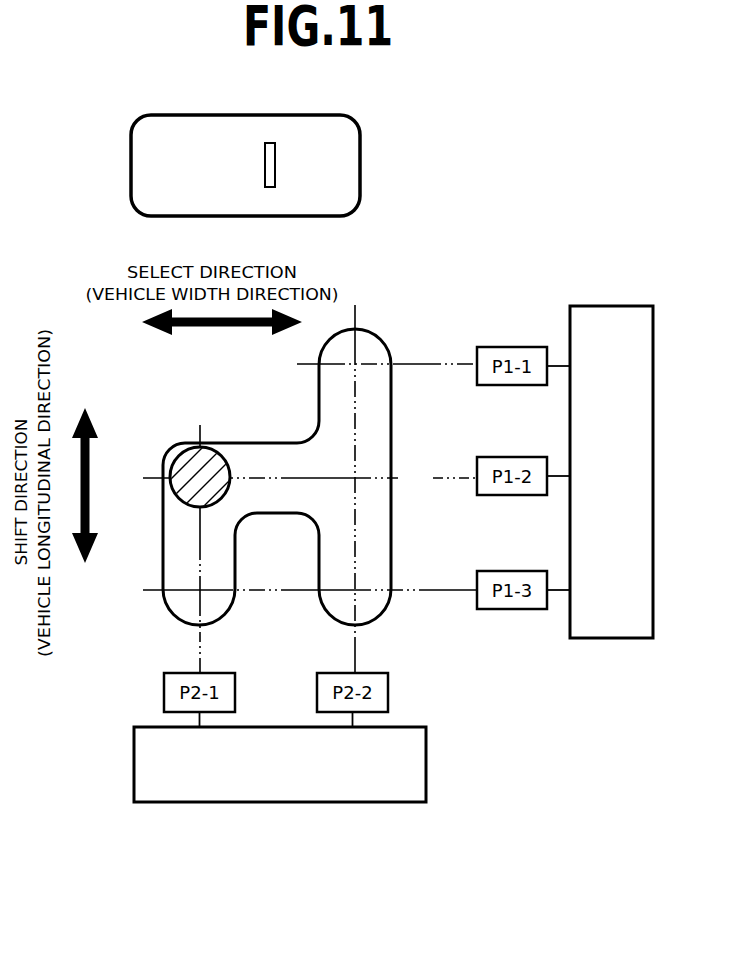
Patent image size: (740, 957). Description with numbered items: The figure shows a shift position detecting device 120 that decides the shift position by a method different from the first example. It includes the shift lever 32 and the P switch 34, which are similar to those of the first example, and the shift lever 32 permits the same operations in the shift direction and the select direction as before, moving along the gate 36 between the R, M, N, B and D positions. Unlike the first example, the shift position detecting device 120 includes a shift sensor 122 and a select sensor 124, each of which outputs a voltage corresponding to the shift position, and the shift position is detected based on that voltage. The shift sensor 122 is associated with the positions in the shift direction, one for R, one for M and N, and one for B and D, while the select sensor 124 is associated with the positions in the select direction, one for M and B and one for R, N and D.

The shift position detecting device 120 is at (518, 82).
The P switch 34 is at (148, 181).
The shift gate 36 is at (390, 456).
The shift lever 32 is at (212, 446).
The shift sensor 122 is at (598, 313).
The select sensor 124 is at (145, 755).